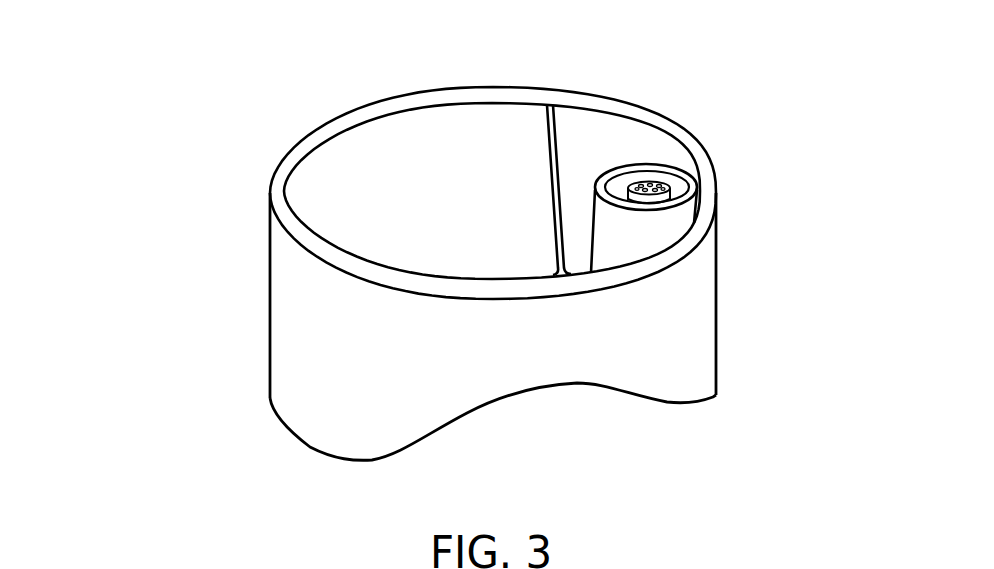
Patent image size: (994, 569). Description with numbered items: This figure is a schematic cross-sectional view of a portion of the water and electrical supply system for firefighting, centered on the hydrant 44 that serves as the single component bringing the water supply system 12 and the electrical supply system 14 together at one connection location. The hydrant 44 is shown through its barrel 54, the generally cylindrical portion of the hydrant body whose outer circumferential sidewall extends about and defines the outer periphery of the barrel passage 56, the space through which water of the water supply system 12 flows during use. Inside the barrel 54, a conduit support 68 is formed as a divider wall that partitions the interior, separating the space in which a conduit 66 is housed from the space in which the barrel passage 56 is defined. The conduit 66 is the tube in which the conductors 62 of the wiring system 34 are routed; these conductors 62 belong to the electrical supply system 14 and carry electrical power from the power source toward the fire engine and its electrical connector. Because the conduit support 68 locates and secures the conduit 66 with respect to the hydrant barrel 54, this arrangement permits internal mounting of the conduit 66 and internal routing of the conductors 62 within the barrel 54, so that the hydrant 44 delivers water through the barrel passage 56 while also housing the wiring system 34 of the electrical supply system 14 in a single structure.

The water supply system 12 is at (118, 180).
The electrical supply system 14 is at (770, 139).
The wiring system 34 is at (643, 76).
The hydrant 44 is at (160, 345).
The barrel 54 is at (290, 373).
The barrel passage 56 is at (368, 188).
The conductors 62 is at (653, 182).
The conduit 66 is at (653, 229).
The conduit support 68 is at (547, 148).